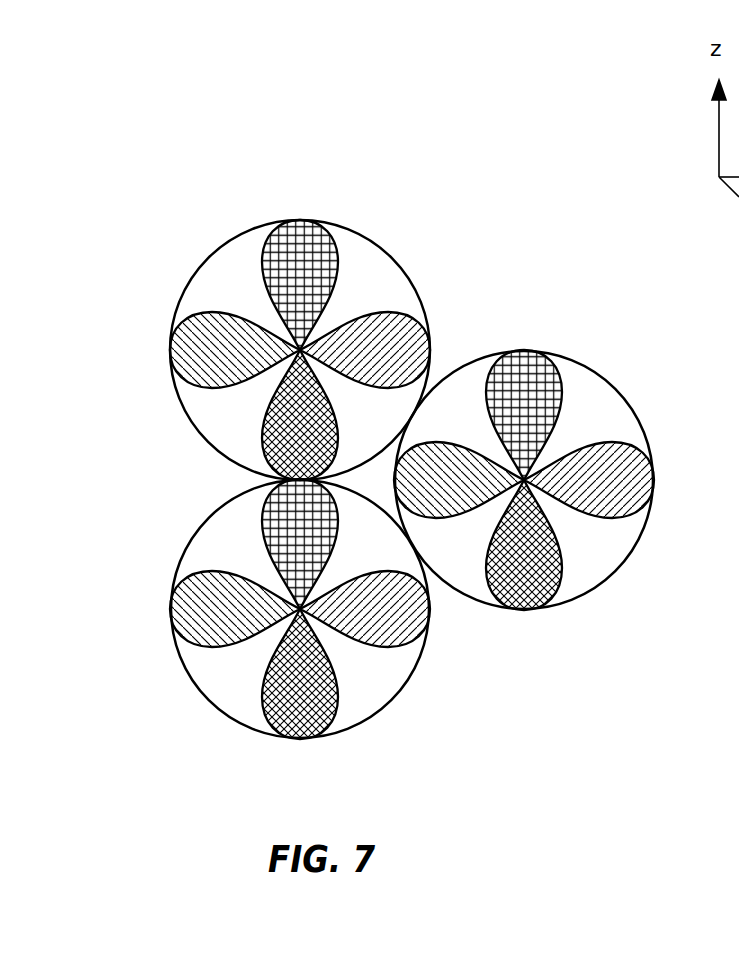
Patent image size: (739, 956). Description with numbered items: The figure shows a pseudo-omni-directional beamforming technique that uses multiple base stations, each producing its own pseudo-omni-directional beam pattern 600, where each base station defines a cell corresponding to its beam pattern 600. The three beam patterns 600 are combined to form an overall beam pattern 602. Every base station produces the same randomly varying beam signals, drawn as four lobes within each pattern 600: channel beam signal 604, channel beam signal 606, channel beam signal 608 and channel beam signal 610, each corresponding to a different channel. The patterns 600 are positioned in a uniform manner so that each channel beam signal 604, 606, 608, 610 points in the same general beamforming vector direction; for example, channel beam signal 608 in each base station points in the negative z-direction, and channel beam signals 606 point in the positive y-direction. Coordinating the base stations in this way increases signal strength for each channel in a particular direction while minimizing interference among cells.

The pseudo-omni-directional beam pattern 600 is at (390, 254).
The overall beam pattern 602 is at (522, 208).
The channel beam signal 604 is at (300, 221).
The channel beam signal 606 is at (428, 344).
The channel beam signal 608 is at (290, 475).
The channel beam signal 610 is at (173, 342).